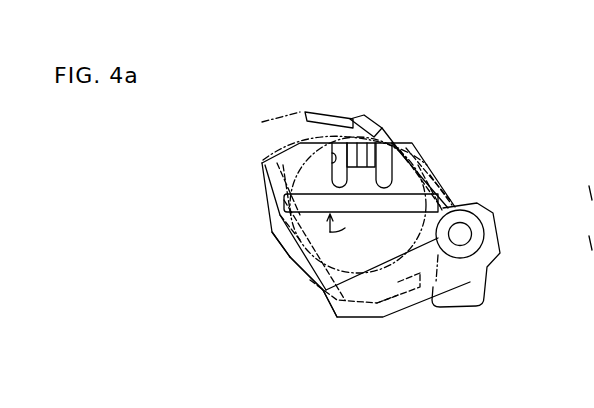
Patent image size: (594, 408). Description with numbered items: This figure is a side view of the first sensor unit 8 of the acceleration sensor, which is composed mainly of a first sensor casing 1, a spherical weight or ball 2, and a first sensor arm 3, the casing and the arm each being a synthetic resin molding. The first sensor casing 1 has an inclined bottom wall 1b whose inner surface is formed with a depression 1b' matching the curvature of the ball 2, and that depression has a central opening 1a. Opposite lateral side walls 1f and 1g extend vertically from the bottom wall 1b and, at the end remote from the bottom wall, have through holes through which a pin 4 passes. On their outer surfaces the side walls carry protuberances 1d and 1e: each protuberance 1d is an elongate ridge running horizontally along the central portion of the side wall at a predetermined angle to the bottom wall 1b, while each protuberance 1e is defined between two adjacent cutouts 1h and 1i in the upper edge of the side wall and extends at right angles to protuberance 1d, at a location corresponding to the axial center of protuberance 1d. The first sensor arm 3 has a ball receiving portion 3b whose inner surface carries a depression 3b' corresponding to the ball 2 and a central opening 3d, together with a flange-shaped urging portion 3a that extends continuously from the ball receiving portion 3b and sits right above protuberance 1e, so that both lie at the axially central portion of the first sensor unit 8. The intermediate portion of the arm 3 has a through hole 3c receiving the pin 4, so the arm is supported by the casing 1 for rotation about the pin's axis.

The first sensor casing 1 is at (362, 300).
The central opening 1a is at (283, 237).
The bottom wall 1b is at (283, 284).
The depression 1b' is at (249, 235).
The protuberance 1d is at (285, 200).
The protuberance 1e is at (360, 165).
The lateral side wall 1f is at (387, 299).
The lateral side wall 1g is at (403, 283).
The cutout 1h is at (346, 152).
The cutout 1i is at (335, 178).
The spherical weight or ball 2 is at (262, 122).
The first sensor arm 3 is at (492, 255).
The urging portion 3a is at (322, 116).
The ball receiving portion 3b is at (462, 166).
The depression 3b' is at (444, 155).
The through hole 3c is at (501, 242).
The central opening 3d is at (417, 140).
The pin 4 is at (491, 210).
The first sensor unit 8 is at (312, 292).